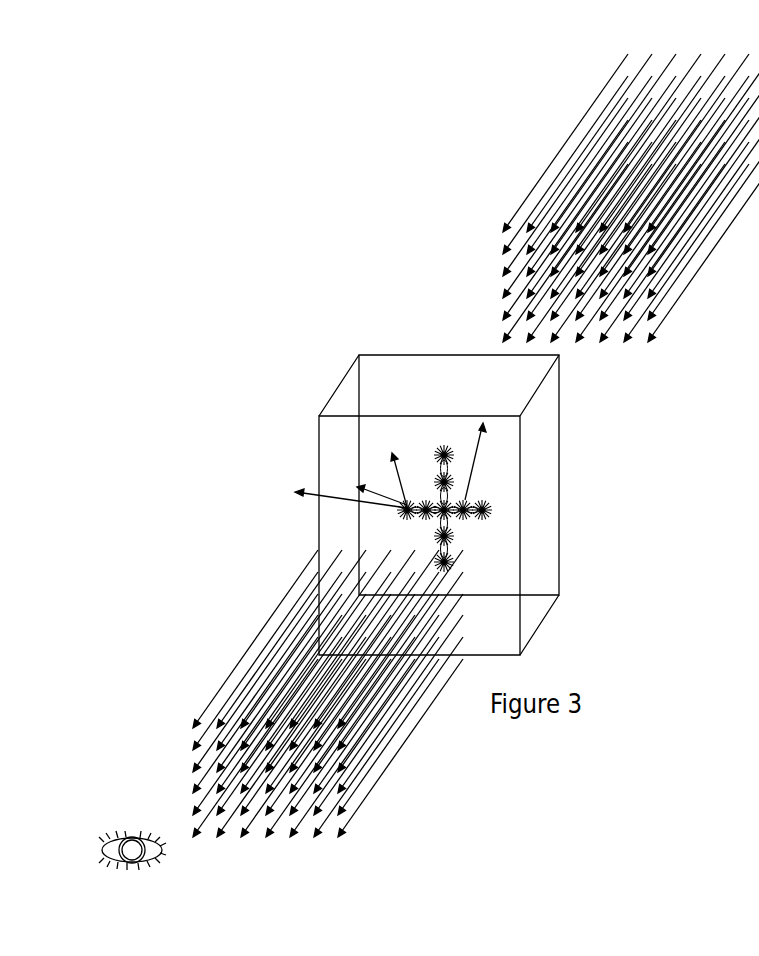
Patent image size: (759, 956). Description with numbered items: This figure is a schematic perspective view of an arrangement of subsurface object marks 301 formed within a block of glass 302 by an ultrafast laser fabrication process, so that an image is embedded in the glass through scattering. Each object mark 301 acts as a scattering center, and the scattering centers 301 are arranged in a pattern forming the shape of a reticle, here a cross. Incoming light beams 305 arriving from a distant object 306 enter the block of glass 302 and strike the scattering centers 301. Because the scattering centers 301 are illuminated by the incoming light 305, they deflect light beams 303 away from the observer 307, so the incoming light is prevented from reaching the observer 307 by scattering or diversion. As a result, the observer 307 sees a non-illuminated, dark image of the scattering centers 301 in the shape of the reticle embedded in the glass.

The object marks 301 is at (497, 510).
The block of glass 302 is at (577, 576).
The deflected light beams 303 is at (478, 458).
The incoming light beams 305 is at (540, 178).
The distant object 306 is at (607, 175).
The observer 307 is at (130, 830).